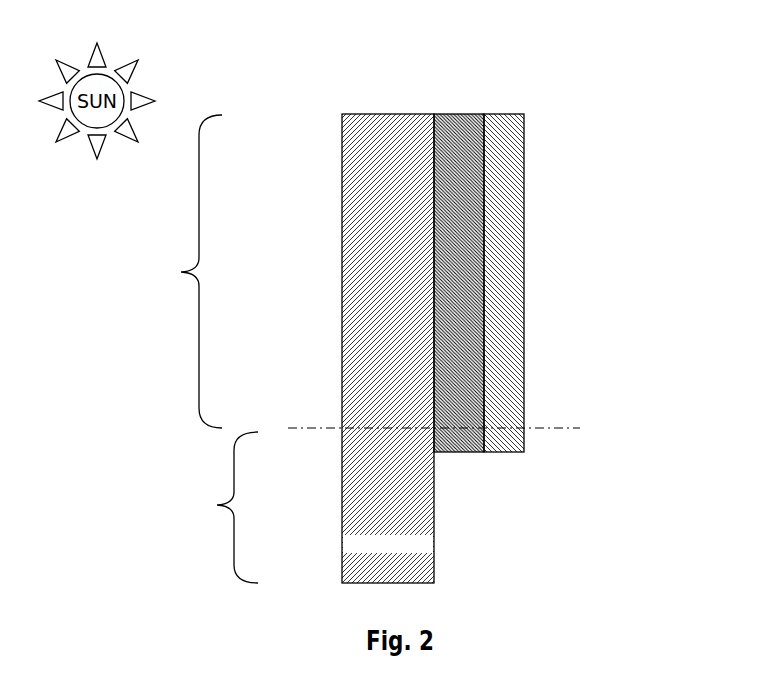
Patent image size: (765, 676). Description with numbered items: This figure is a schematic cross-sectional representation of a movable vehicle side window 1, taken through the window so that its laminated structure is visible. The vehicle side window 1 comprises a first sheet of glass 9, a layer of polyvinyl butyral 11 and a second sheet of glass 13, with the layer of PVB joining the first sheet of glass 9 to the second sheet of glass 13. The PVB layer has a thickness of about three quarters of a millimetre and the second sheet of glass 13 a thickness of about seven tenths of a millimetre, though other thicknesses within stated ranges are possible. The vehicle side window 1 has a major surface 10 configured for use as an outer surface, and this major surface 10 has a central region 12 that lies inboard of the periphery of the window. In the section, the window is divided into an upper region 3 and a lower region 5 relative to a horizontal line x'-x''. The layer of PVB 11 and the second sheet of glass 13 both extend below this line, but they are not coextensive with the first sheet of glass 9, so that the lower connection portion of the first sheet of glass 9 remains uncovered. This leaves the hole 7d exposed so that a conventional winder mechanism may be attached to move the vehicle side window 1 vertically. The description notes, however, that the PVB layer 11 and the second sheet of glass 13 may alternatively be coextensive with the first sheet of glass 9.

The vehicle side window 1 is at (424, 301).
The upper region 3 is at (187, 271).
The lower region 5 is at (223, 507).
The hole 7d is at (444, 543).
The first sheet of glass 9 is at (400, 128).
The major surface 10 is at (338, 147).
The layer of polyvinyl butyral (PVB) 11 is at (460, 124).
The central region 12 is at (318, 265).
The second sheet of glass 13 is at (510, 127).